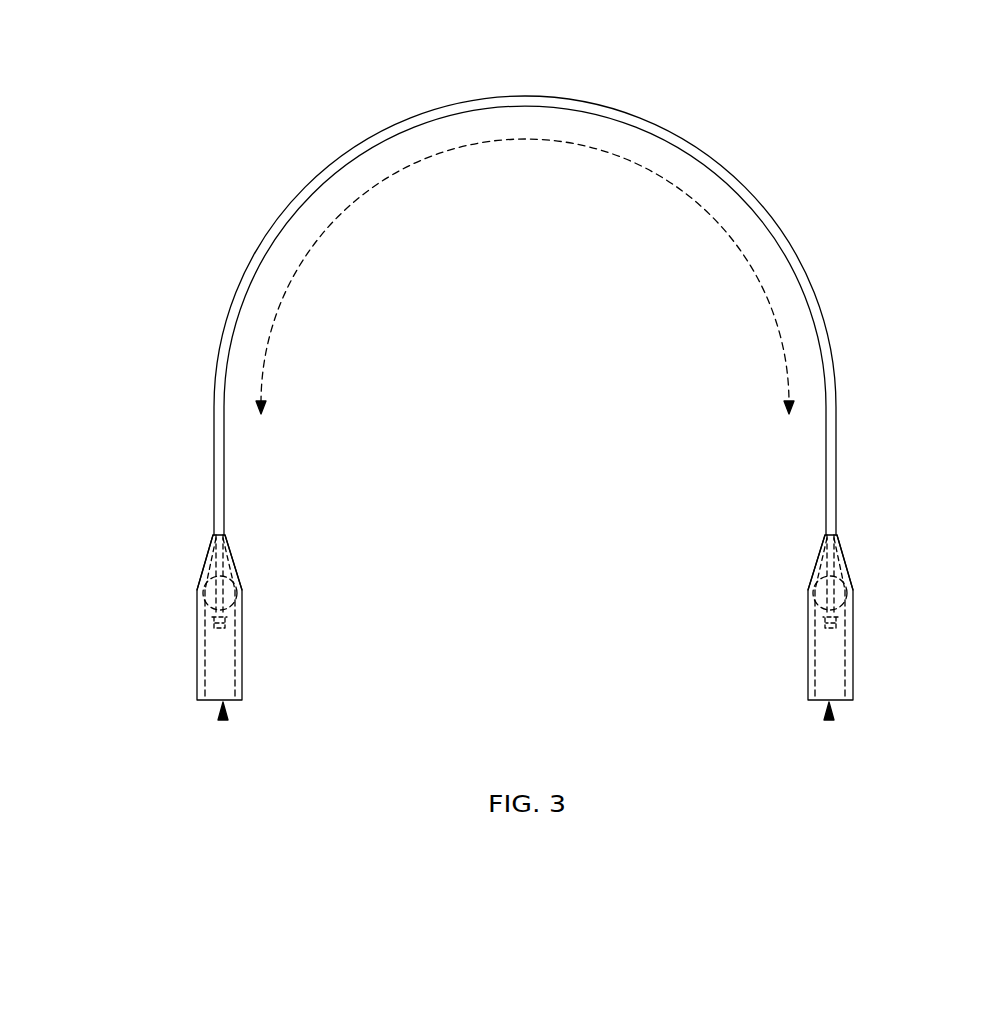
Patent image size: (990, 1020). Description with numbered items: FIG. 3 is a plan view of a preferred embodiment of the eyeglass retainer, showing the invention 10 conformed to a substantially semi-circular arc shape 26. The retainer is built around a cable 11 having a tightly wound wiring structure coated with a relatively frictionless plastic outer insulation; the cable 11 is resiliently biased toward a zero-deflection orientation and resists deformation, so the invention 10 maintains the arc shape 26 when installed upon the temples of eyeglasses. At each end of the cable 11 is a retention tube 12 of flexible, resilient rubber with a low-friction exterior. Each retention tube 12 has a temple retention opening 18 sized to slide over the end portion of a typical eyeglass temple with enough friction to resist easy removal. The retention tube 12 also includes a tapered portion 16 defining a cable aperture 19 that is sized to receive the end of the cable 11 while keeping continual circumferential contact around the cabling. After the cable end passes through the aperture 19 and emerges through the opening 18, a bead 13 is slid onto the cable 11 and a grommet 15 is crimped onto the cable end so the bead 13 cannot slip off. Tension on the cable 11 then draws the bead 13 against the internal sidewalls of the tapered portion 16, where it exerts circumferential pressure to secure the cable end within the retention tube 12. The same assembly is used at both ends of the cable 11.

The invention 10 is at (263, 172).
The cable 11 is at (798, 272).
The retention tube 12 is at (183, 632).
The bead 13 is at (232, 593).
The grommet 15 is at (227, 620).
The tapered portion 16 is at (204, 572).
The temple retention opening 18 is at (223, 720).
The cable aperture 19 is at (222, 532).
The arc shape 26 is at (524, 145).